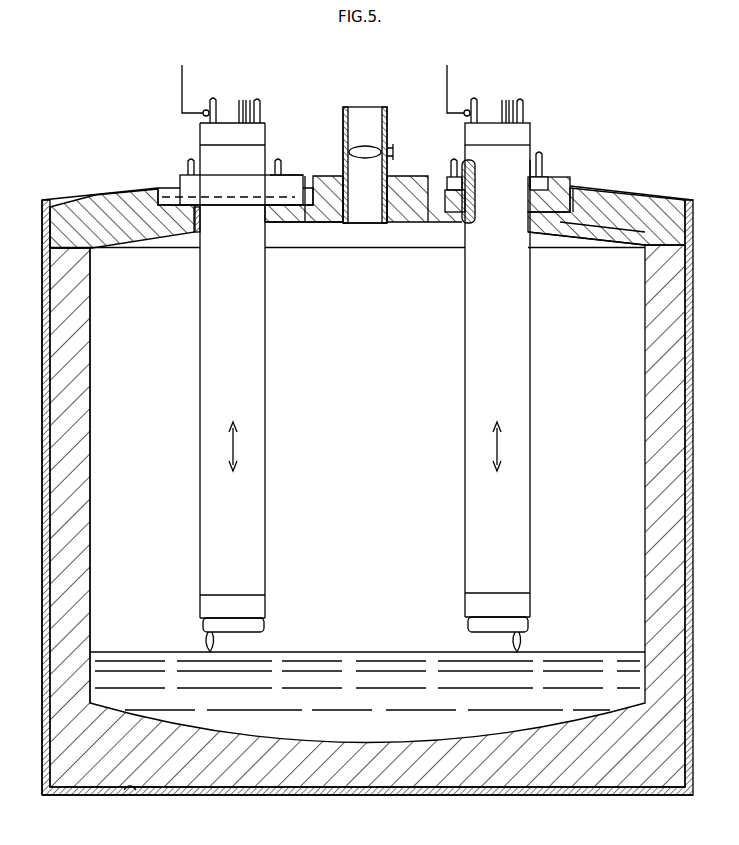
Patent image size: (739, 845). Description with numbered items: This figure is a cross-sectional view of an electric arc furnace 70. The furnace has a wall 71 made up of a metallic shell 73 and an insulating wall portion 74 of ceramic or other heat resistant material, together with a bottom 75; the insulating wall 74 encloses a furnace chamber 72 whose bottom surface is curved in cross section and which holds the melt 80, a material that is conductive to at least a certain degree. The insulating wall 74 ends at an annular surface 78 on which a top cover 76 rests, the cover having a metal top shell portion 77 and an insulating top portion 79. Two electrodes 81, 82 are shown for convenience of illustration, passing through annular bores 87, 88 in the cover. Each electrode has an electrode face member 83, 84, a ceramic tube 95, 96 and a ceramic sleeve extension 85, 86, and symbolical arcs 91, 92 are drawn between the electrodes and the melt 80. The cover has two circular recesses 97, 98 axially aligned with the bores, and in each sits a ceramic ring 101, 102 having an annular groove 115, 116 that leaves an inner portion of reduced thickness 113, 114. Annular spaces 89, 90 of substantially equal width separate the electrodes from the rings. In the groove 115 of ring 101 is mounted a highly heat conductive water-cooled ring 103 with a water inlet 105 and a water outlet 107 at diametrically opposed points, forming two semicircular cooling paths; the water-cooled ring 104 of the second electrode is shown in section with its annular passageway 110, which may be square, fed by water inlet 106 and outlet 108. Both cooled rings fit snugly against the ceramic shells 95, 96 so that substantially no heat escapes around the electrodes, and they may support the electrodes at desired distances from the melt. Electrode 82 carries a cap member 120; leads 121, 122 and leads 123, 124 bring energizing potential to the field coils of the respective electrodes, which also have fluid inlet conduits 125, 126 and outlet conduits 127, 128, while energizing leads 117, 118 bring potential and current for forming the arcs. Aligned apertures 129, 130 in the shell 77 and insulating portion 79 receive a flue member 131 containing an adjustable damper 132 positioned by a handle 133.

The furnace 70 is at (44, 316).
The wall 71 is at (45, 356).
The furnace chamber 72 is at (376, 457).
The metallic shell 73 is at (45, 426).
The insulating wall portion 74 is at (88, 416).
The bottom 75 is at (128, 790).
The top cover 76 is at (48, 235).
The top shell portion 77 is at (50, 200).
The annular surface 78 is at (46, 260).
The insulating top portion 79 is at (106, 200).
The melt 80 is at (350, 692).
The electrode 81 is at (200, 500).
The electrode 82 is at (467, 526).
The electrode face member 83 is at (258, 624).
The electrode face member 84 is at (476, 626).
The ceramic sleeve extension 85 is at (206, 602).
The ceramic sleeve extension 86 is at (474, 600).
The annular bore 87 is at (198, 222).
The annular bore 88 is at (470, 218).
The space 89 is at (270, 232).
The space 90 is at (534, 232).
The arc 91 is at (208, 640).
The arc 92 is at (520, 642).
The ceramic tube 95 is at (200, 352).
The ceramic tube 96 is at (466, 406).
The recess 97 is at (162, 190).
The recess 98 is at (600, 238).
The ceramic ring 101 is at (176, 190).
The ceramic ring 102 is at (562, 190).
The water-cooled ring 103 is at (284, 178).
The water-cooled ring 104 is at (529, 173).
The water inlet 105 is at (190, 160).
The water inlet 106 is at (453, 160).
The water outlet 107 is at (278, 160).
The water outlet 108 is at (542, 164).
The annular passageway 110 is at (546, 186).
The inner portion of reduced thickness 113 is at (276, 208).
The inner portion of reduced thickness 114 is at (562, 238).
The annular groove 115 is at (300, 212).
The annular groove 116 is at (440, 210).
The energizing lead 117 is at (182, 92).
The energizing lead 118 is at (447, 92).
The cap member 120 is at (522, 132).
The lead 121 is at (240, 105).
The lead 122 is at (248, 100).
The lead 123 is at (504, 105).
The lead 124 is at (511, 100).
The fluid inlet conduit 125 is at (212, 97).
The fluid inlet conduit 126 is at (474, 97).
The outlet conduit 127 is at (258, 108).
The outlet conduit 128 is at (523, 108).
The aperture 129 is at (344, 182).
The aperture 130 is at (330, 228).
The flue member 131 is at (362, 112).
The adjustable damper 132 is at (372, 150).
The handle 133 is at (394, 152).